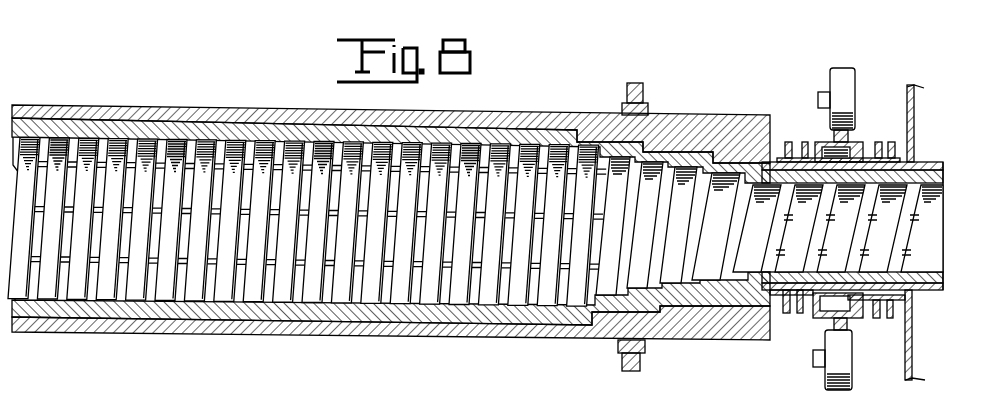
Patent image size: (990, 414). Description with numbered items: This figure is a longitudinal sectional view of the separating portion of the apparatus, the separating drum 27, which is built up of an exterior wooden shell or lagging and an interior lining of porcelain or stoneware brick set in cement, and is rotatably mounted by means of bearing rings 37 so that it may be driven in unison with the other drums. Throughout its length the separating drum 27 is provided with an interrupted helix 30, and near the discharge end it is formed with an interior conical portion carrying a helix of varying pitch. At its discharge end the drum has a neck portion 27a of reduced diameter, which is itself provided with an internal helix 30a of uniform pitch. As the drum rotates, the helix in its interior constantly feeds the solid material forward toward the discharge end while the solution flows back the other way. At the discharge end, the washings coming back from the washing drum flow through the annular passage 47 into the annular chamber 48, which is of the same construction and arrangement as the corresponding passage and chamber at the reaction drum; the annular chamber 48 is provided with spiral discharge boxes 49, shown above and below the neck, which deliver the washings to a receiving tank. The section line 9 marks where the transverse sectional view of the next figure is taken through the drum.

The separating drum 27 is at (290, 103).
The neck portion 27a is at (924, 162).
The interrupted helix 30 is at (191, 235).
The internal helix 30a is at (819, 249).
The bearing rings 37 is at (620, 365).
The annular passage 47 is at (912, 297).
The annular chamber 48 is at (828, 306).
The spiral discharge boxes 49 is at (840, 75).
The section line 9— 9 is at (558, 112).